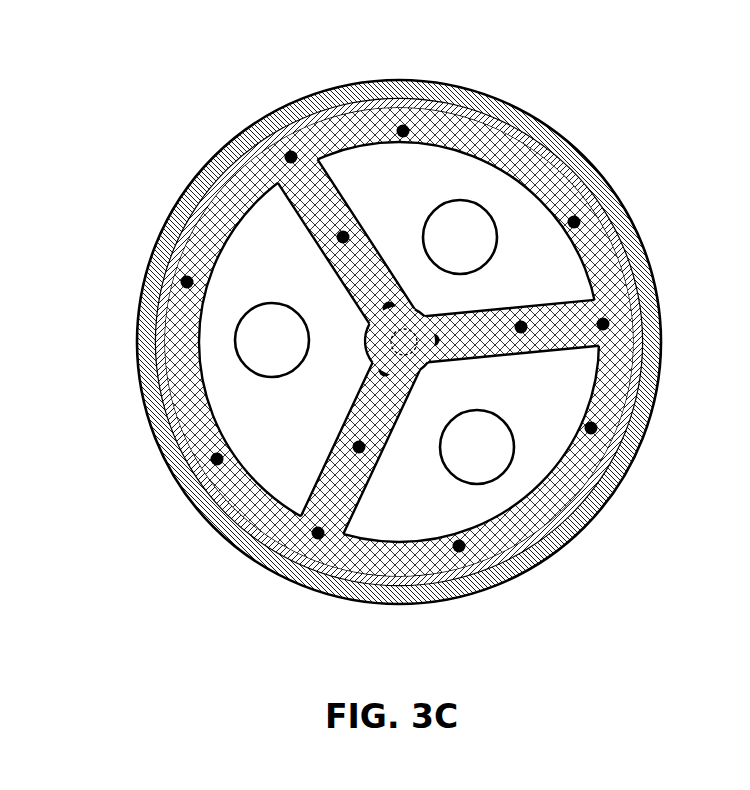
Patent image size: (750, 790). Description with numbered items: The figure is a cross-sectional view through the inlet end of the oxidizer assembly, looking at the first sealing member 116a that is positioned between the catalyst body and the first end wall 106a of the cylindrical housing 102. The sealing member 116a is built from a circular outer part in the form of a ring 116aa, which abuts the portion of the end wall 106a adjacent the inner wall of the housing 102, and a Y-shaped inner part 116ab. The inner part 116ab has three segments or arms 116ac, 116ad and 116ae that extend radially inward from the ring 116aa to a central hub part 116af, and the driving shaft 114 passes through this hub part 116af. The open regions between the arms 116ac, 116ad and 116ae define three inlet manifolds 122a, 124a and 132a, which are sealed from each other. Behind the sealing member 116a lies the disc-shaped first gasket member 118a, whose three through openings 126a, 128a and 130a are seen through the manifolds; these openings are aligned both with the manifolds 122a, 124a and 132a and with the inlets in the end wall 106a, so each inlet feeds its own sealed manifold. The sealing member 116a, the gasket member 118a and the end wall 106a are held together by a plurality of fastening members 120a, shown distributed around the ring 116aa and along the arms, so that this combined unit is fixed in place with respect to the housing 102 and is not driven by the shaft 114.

The housing 102 is at (377, 81).
The first end wall 106a is at (488, 101).
The driving shaft 114 is at (402, 344).
The first sealing member 116a is at (558, 318).
The ring 116aa is at (602, 265).
The inner part 116ab is at (593, 347).
The arm 116ac is at (634, 285).
The arm 116ad is at (320, 207).
The arm 116ae is at (268, 553).
The central hub part 116af is at (412, 320).
The first gasket member 118a is at (525, 227).
The fastening member 120a is at (200, 487).
The inlet manifold 122a is at (540, 266).
The inlet manifold 124a is at (222, 282).
The through opening 126a is at (472, 222).
The through opening 128a is at (485, 460).
The through opening 130a is at (258, 338).
The inlet manifold 132a is at (565, 370).